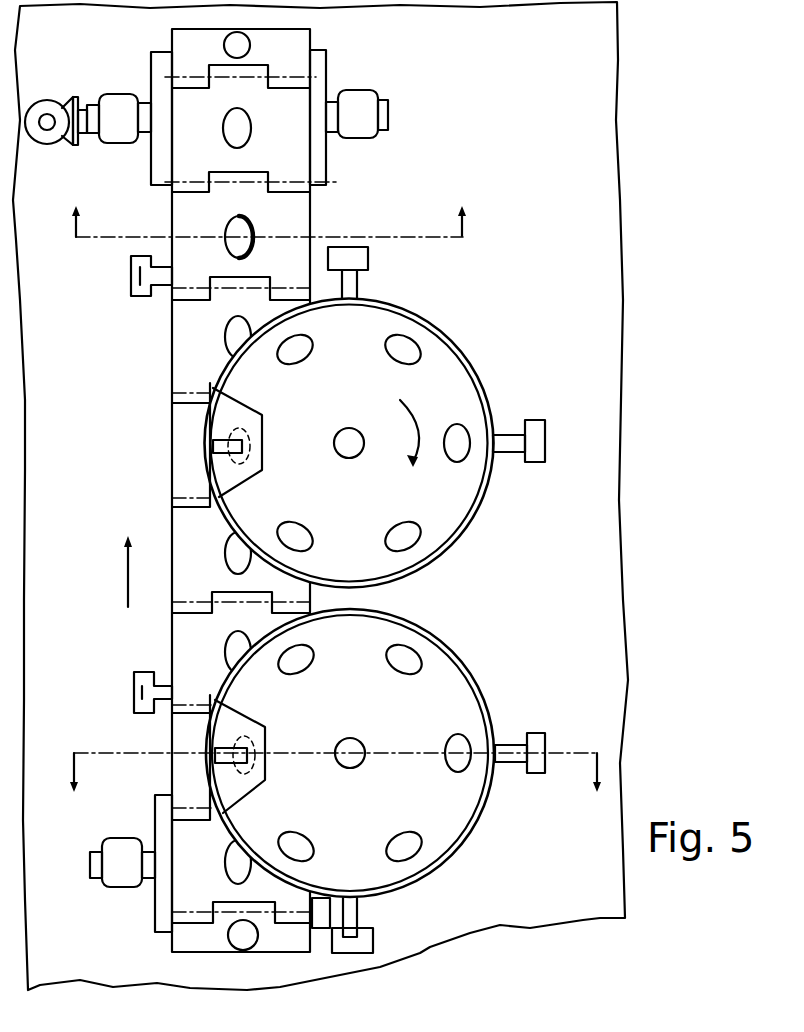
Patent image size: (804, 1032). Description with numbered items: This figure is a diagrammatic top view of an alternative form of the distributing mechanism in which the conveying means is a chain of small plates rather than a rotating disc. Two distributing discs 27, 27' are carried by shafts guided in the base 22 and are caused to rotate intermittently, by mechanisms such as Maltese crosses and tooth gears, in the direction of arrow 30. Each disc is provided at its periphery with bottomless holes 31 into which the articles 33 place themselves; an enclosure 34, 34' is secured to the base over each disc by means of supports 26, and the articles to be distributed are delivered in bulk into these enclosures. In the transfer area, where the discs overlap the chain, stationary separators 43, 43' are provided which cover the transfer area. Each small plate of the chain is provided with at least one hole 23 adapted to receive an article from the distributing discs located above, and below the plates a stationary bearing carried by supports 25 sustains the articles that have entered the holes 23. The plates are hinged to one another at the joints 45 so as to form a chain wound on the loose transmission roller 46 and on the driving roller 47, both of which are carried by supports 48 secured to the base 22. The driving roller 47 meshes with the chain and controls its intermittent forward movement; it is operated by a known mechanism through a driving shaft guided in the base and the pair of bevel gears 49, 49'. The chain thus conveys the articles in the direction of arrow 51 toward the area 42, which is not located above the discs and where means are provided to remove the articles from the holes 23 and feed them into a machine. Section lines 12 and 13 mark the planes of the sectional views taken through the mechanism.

The base 22 is at (564, 65).
The hole 23 is at (235, 650).
The support 25 is at (135, 287).
The support 26 is at (497, 438).
The distributing disc 27 is at (349, 432).
The distributing disc 27' is at (361, 753).
The arrow 30 is at (421, 600).
The bottomless hole 31 is at (397, 662).
The article 33 is at (238, 242).
The enclosure 34 is at (481, 340).
The enclosure 34' is at (496, 640).
The area 42 is at (190, 218).
The stationary separator 43 is at (246, 445).
The stationary separator 43' is at (244, 757).
The joint 45 is at (335, 178).
The loose transmission roller 46 is at (162, 910).
The driving roller 47 is at (320, 58).
The support 48 is at (122, 103).
The bevel gear 49 is at (47, 144).
The bevel gear 49' is at (66, 103).
The arrow 51 is at (117, 571).
The section line 12 is at (268, 218).
The section line 13 is at (337, 782).